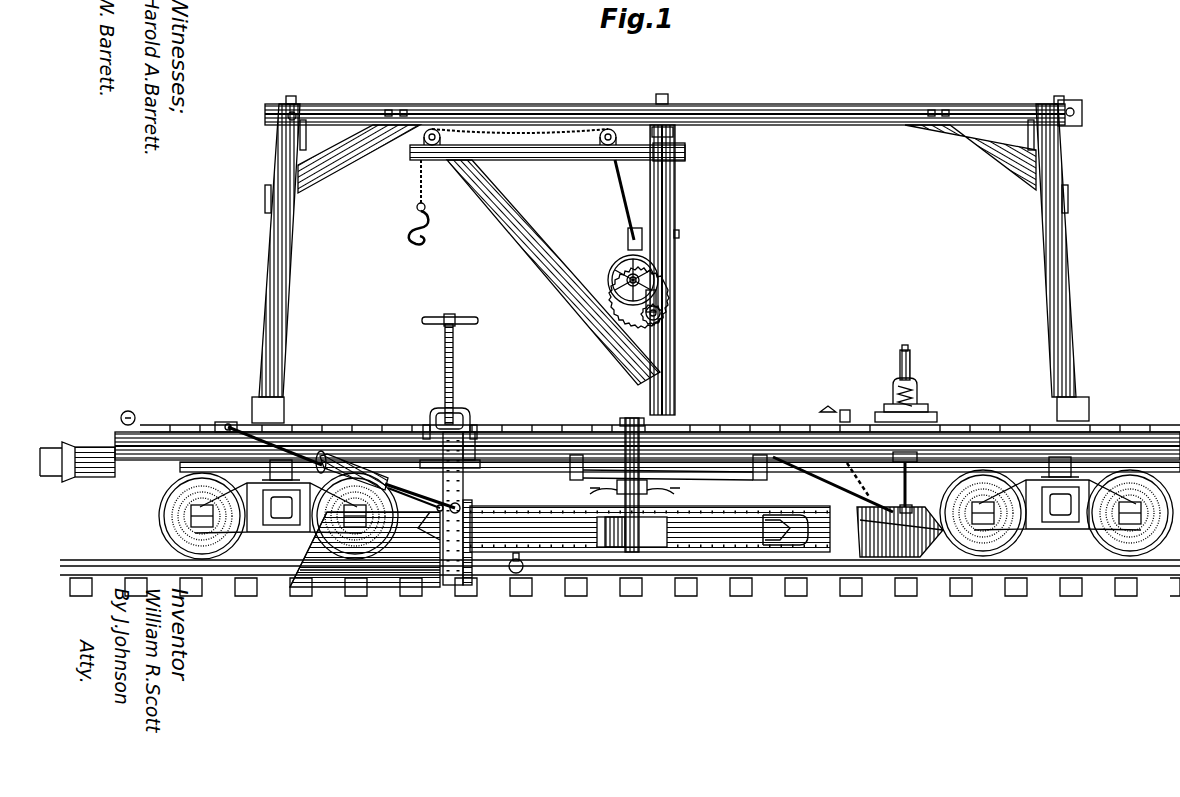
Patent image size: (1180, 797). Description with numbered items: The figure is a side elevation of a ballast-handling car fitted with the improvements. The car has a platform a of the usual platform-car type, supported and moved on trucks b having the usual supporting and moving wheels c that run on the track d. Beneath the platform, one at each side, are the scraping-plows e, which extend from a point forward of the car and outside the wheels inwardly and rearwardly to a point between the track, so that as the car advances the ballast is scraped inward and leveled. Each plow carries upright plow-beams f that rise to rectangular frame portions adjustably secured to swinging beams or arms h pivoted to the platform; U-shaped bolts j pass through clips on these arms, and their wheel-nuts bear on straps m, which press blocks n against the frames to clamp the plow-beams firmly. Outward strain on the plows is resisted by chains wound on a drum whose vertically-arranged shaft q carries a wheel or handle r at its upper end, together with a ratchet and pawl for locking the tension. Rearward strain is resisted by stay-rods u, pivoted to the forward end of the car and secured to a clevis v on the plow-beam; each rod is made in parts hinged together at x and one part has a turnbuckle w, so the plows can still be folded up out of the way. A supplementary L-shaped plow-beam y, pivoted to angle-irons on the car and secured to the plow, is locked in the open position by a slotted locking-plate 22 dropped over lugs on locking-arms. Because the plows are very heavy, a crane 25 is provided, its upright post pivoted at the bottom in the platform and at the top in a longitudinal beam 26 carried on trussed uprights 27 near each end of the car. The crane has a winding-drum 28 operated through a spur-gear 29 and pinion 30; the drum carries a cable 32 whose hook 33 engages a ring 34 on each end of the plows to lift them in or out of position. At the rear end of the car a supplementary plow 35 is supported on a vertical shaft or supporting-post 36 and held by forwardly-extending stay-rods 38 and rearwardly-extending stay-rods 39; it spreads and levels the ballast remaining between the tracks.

The longitudinal beam 26 is at (790, 94).
The trussed uprights 27 is at (291, 266).
The crane 25 is at (676, 226).
The cable 32 is at (622, 192).
The hook 33 is at (430, 229).
The winding-drum 28 is at (612, 262).
The spur-gear 29 is at (665, 275).
The pinion 30 is at (661, 313).
The vertical shaft (supporting-post) 36 is at (920, 373).
The slotted locking-plate 22 is at (650, 492).
The ring 34 is at (522, 575).
The supplementary plow 35 is at (900, 532).
The forwardly-extending stay-rods 38 is at (840, 487).
The rearwardly-extending stay-rods 39 is at (908, 505).
The platform a is at (745, 432).
The trucks b is at (284, 525).
The supporting and moving wheels c is at (155, 521).
The track d is at (838, 577).
The scraping-plows e is at (560, 546).
The upright plow-beams f is at (465, 489).
The beams or arms h is at (465, 422).
The U-shaped bolts j is at (474, 440).
The straps m is at (480, 462).
The blocks n is at (432, 420).
The vertically-arranged shaft q is at (455, 360).
The wheel or handle r is at (478, 320).
The stay-rods u is at (420, 500).
The clevis v is at (438, 512).
The turnbuckle w is at (348, 462).
The hinge x is at (231, 423).
The supplementary L-shaped plow-beam y is at (624, 440).